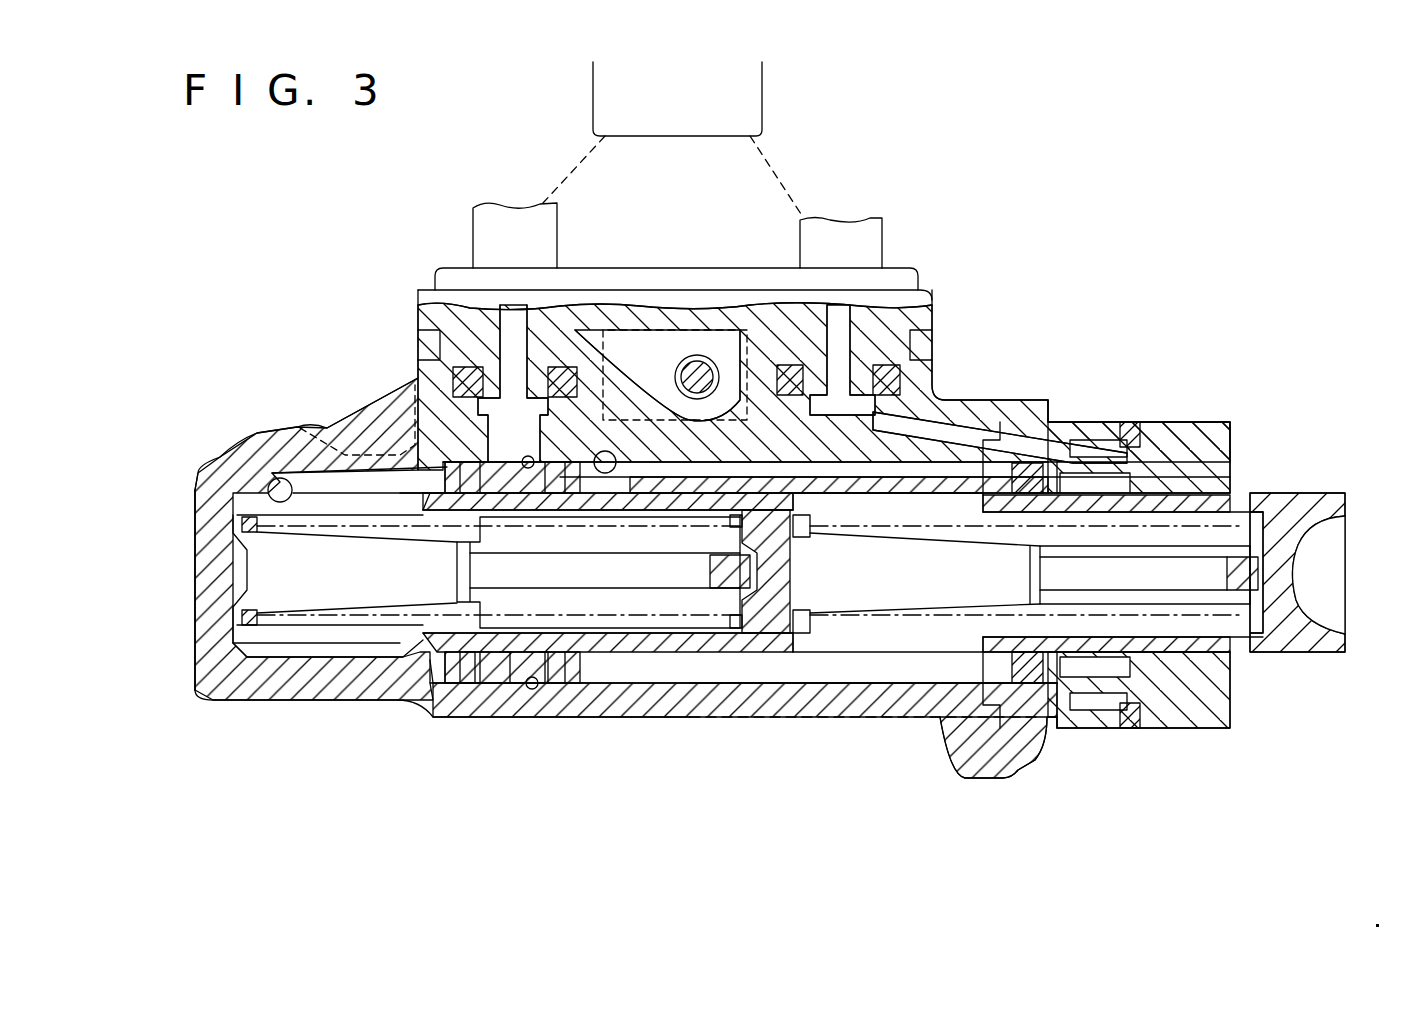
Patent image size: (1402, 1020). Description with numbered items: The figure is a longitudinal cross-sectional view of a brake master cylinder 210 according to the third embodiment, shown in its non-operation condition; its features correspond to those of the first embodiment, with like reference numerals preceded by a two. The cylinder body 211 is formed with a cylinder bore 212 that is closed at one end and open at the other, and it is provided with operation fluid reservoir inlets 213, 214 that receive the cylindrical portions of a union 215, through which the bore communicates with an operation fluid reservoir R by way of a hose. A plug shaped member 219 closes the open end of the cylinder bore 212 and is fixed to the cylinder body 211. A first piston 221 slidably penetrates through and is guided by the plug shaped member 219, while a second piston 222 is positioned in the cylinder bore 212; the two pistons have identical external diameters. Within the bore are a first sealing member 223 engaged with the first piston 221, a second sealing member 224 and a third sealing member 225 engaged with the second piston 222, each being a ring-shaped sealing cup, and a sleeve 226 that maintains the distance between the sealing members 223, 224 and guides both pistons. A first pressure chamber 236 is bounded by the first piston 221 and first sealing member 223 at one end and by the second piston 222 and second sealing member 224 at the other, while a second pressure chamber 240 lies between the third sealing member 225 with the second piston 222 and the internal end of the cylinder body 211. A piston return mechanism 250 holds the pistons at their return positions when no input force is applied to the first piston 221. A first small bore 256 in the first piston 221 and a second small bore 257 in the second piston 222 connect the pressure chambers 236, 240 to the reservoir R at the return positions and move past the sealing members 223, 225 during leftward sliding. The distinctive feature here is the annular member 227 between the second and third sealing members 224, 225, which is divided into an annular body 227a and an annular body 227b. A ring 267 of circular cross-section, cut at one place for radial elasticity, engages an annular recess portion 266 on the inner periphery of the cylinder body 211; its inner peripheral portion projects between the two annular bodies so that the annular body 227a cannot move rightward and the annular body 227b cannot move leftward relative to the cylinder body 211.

The operation fluid reservoir R is at (763, 110).
The master cylinder 210 is at (257, 350).
The cylinder body 211 is at (190, 462).
The cylinder bore 212 is at (815, 663).
The operation fluid reservoir inlet 213 is at (567, 340).
The operation fluid reservoir inlet 214 is at (917, 303).
The union 215 is at (890, 267).
The plug shaped member 219 is at (1210, 680).
The first piston 221 is at (1283, 630).
The second piston 222 is at (735, 663).
The first sealing member 223 is at (1043, 640).
The second sealing member 224 is at (560, 667).
The third sealing member 225 is at (473, 467).
The sleeve 226 is at (763, 673).
The annular member 227 is at (503, 690).
The annular body 227a is at (500, 686).
The annular body 227b is at (543, 670).
The first pressure chamber 236 is at (930, 640).
The second pressure chamber 240 is at (310, 500).
The piston return mechanism 250 is at (868, 645).
The first small bore 256 is at (1050, 500).
The second small bore 257 is at (470, 680).
The annular recess portion 266 is at (532, 690).
The ring 267 is at (523, 457).